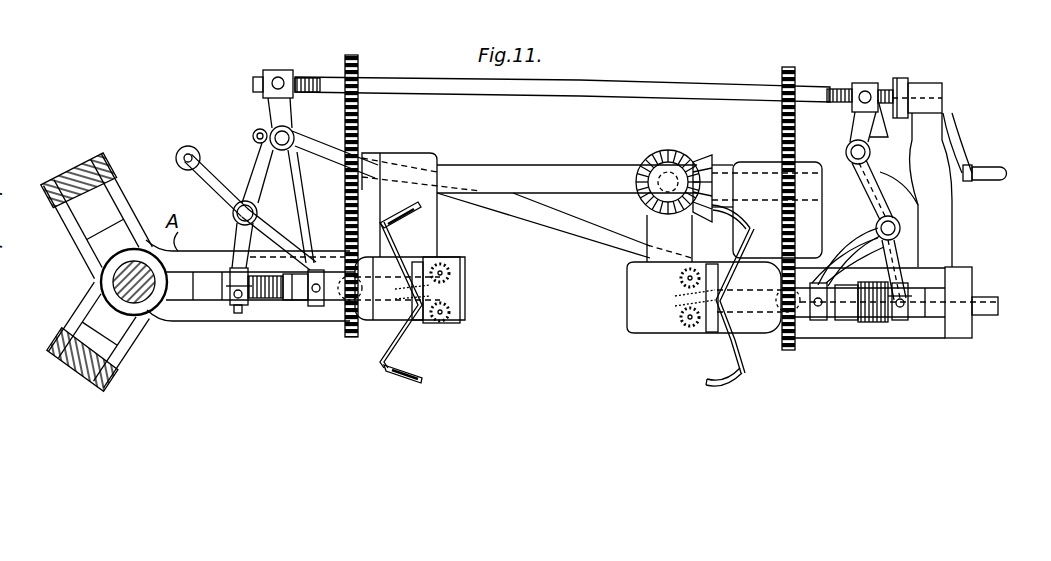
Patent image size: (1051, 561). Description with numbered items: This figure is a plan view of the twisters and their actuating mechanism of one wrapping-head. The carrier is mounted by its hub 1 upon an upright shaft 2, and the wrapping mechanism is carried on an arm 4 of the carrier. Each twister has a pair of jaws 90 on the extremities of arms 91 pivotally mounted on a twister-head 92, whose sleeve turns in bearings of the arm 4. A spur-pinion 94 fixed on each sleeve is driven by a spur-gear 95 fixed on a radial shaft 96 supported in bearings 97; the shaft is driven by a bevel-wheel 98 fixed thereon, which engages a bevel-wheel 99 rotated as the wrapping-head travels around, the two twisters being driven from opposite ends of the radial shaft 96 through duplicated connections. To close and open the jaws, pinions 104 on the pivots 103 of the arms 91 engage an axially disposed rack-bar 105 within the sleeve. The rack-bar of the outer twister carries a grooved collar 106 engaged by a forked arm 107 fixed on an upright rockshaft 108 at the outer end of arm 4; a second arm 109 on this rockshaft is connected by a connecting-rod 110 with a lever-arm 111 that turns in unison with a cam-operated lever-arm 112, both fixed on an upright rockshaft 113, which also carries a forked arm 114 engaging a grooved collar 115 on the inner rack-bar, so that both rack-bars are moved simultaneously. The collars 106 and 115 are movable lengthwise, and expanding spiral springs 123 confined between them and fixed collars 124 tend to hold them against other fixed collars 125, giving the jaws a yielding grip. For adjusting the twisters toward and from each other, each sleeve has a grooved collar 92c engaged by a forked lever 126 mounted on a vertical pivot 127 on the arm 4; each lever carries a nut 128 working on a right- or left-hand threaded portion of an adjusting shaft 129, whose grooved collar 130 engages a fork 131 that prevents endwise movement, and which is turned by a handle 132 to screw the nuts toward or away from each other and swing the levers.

The hub 1 is at (158, 326).
The upright shaft 2 is at (113, 278).
The arm of the carrier 4 is at (110, 178).
The jaws 90 is at (422, 215).
The arms 91 is at (390, 248).
The twister-head 92 is at (377, 323).
The grooved collar 92c is at (316, 307).
The spur-pinion 94 is at (342, 340).
The spur-gear 95 is at (360, 119).
The radial shaft 96 is at (530, 165).
The bearings 97 is at (425, 153).
The bevel-wheel 98 is at (705, 155).
The bevel-wheel 99 is at (667, 150).
The pivots 103 is at (447, 265).
The pinions 104 is at (455, 270).
The rack-bar 105 is at (423, 266).
The grooved collar 106 is at (905, 325).
The forked arm 107 is at (905, 259).
The upright rockshaft 108 is at (902, 225).
The second arm 109 is at (833, 260).
The connecting-rod 110 is at (546, 226).
The lever-arm 111 is at (258, 147).
The cam-operated lever-arm 112 is at (183, 147).
The upright rockshaft 113 is at (258, 212).
The forked arm 114 is at (236, 240).
The grooved collar 115 is at (238, 314).
The expanding spiral springs 123 is at (290, 302).
The fixed collars 124 is at (280, 270).
The fixed collars 125 is at (233, 306).
The forked levers 126 is at (302, 214).
The vertical pivots 127 is at (292, 165).
The nut 128 is at (283, 70).
The adjusting shaft 129 is at (598, 89).
The grooved collar 130 is at (912, 82).
The fork 131 is at (900, 77).
The handle 132 is at (962, 153).